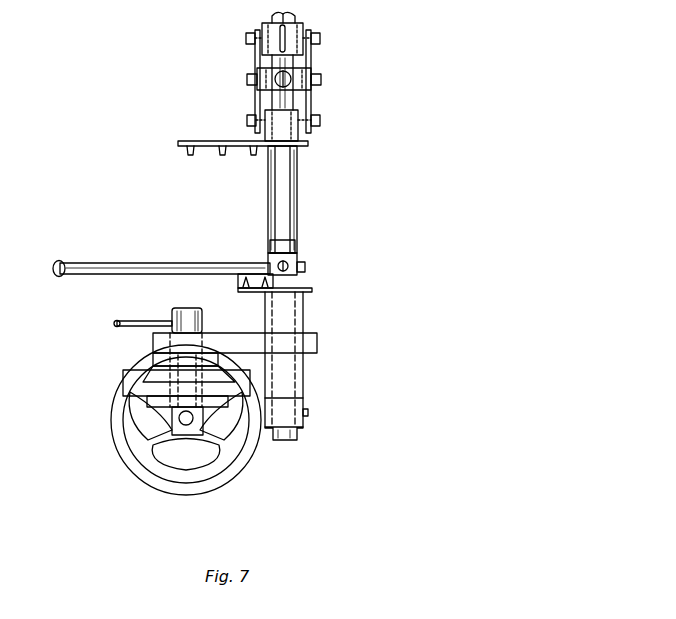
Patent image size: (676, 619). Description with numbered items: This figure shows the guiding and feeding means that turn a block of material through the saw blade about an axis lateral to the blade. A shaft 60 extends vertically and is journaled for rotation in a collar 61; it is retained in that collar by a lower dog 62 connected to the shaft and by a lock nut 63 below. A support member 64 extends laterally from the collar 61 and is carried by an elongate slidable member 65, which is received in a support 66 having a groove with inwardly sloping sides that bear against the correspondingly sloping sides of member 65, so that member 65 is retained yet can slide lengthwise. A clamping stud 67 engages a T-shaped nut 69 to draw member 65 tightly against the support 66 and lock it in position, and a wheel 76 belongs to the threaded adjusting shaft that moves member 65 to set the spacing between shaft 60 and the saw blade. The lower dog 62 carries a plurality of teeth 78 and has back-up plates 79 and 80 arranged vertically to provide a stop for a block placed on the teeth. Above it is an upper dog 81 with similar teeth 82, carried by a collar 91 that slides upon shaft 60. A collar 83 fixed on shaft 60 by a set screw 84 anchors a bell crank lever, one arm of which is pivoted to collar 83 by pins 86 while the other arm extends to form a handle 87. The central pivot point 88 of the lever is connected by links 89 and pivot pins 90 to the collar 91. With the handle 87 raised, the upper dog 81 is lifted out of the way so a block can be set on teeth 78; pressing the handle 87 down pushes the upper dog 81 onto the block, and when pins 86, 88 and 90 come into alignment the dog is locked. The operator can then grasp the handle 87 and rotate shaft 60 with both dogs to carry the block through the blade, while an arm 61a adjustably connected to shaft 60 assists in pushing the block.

The shaft 60 is at (297, 215).
The collar 61 is at (303, 315).
The arm 61a is at (97, 262).
The lower dog 62 is at (310, 288).
The lock nut 63 is at (300, 430).
The support member 64 is at (317, 352).
The elongate slidable member 65 is at (157, 372).
The support 66 is at (128, 390).
The clamping stud 67 is at (172, 311).
The T-shaped nut 69 is at (147, 407).
The wheel 76 is at (120, 463).
The teeth 78 is at (245, 275).
The back-up plate 79 is at (265, 258).
The back-up plate 80 is at (296, 277).
The upper dog 81 is at (298, 141).
The teeth 82 is at (185, 147).
The collar 83 is at (295, 18).
The set screw 84 is at (283, 35).
The pins 86 is at (246, 38).
The handle 87 is at (291, 77).
The central pivot point 88 is at (253, 80).
The links 89 is at (258, 95).
The pivot pins 90 is at (253, 120).
The collar 91 is at (285, 127).